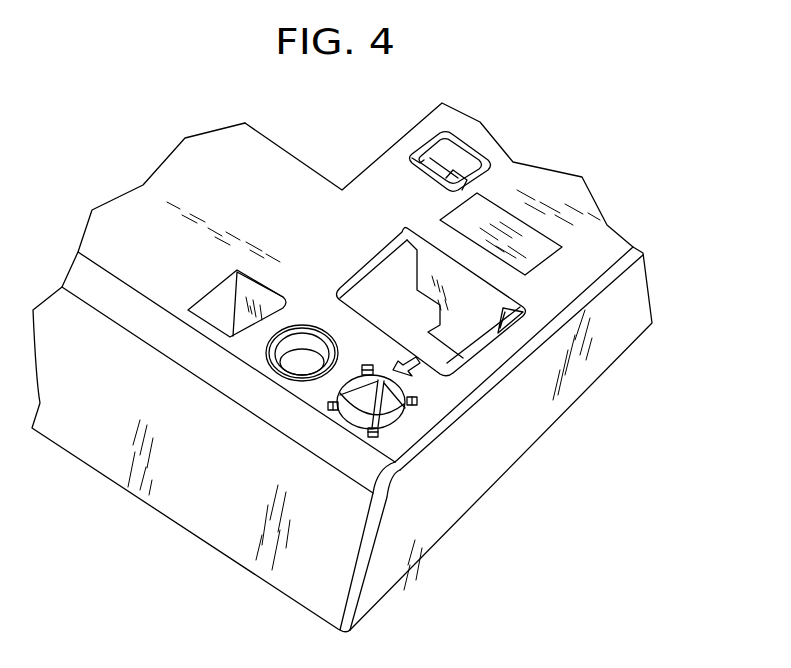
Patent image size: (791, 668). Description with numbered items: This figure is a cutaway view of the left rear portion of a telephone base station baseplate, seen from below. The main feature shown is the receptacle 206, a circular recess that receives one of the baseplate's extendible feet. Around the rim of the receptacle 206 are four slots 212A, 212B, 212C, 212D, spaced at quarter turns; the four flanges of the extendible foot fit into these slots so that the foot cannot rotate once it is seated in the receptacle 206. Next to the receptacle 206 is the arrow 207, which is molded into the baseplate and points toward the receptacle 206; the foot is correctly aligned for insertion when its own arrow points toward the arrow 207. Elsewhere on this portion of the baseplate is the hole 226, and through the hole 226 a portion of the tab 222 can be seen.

The receptacle 206 is at (353, 430).
The arrow 207 is at (340, 393).
The slot 212A is at (417, 401).
The slot 212B is at (372, 438).
The slot 212C is at (328, 407).
The slot 212D is at (368, 371).
The tab 222 is at (492, 302).
The hole 226 is at (393, 296).